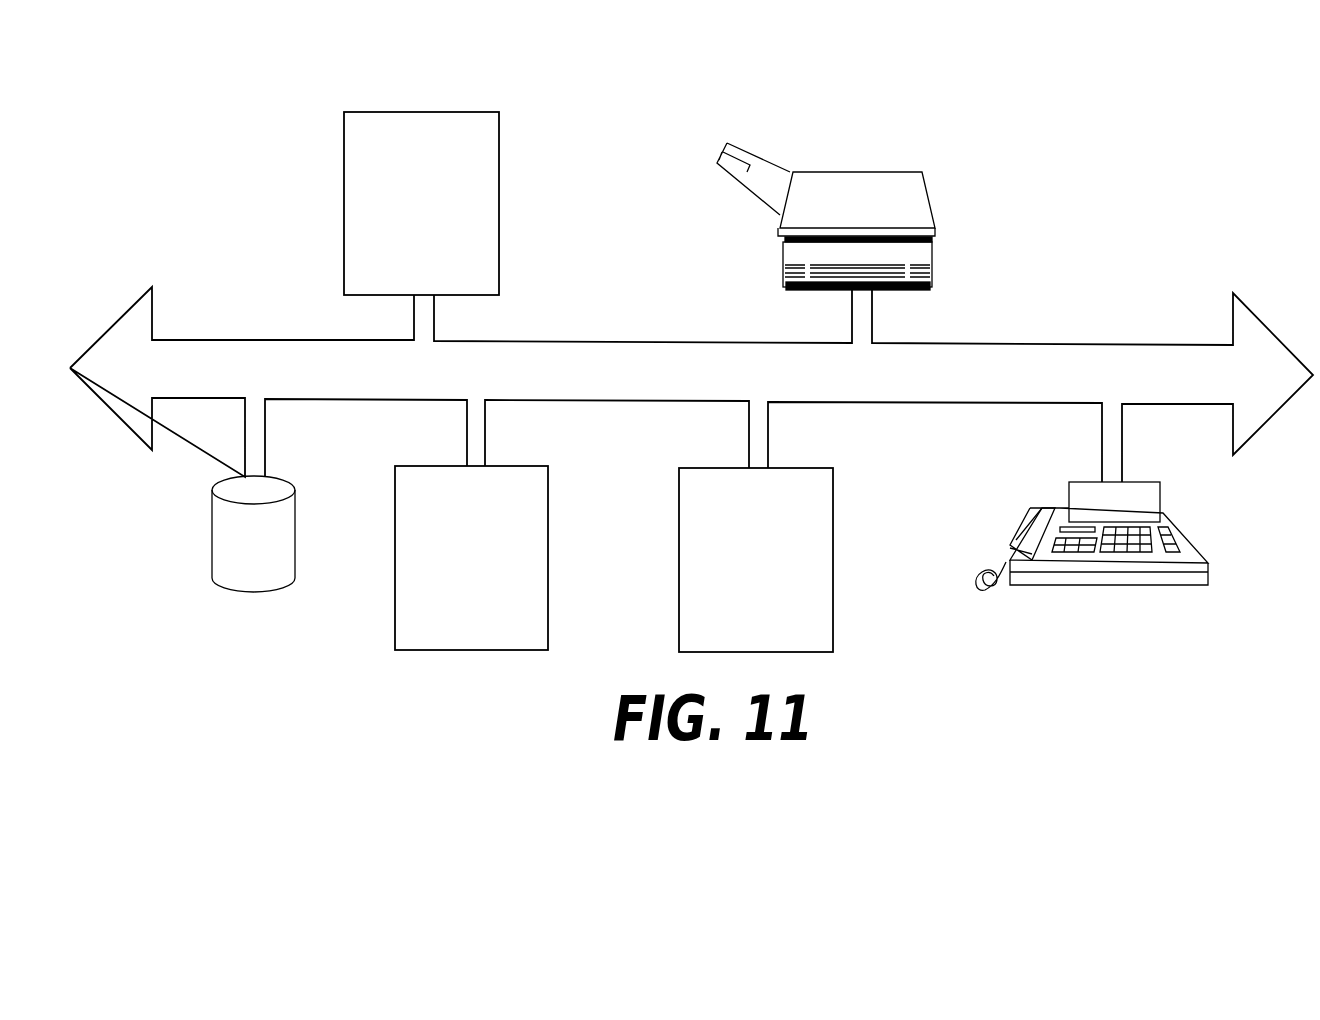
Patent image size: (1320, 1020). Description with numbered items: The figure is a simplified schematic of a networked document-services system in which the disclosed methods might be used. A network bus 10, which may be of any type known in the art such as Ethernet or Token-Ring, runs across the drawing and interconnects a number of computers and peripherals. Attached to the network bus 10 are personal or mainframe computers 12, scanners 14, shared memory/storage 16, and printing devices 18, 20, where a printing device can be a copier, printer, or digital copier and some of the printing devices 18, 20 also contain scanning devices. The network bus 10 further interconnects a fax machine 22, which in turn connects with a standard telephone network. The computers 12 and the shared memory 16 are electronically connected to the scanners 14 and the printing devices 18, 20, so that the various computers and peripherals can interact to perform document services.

The network bus 10 is at (1025, 345).
The computers 12 is at (473, 112).
The scanners 14 is at (836, 172).
The shared memory/storage 16 is at (277, 477).
The printing device 18 is at (527, 466).
The printing device 20 is at (802, 468).
The fax machine 22 is at (1185, 533).